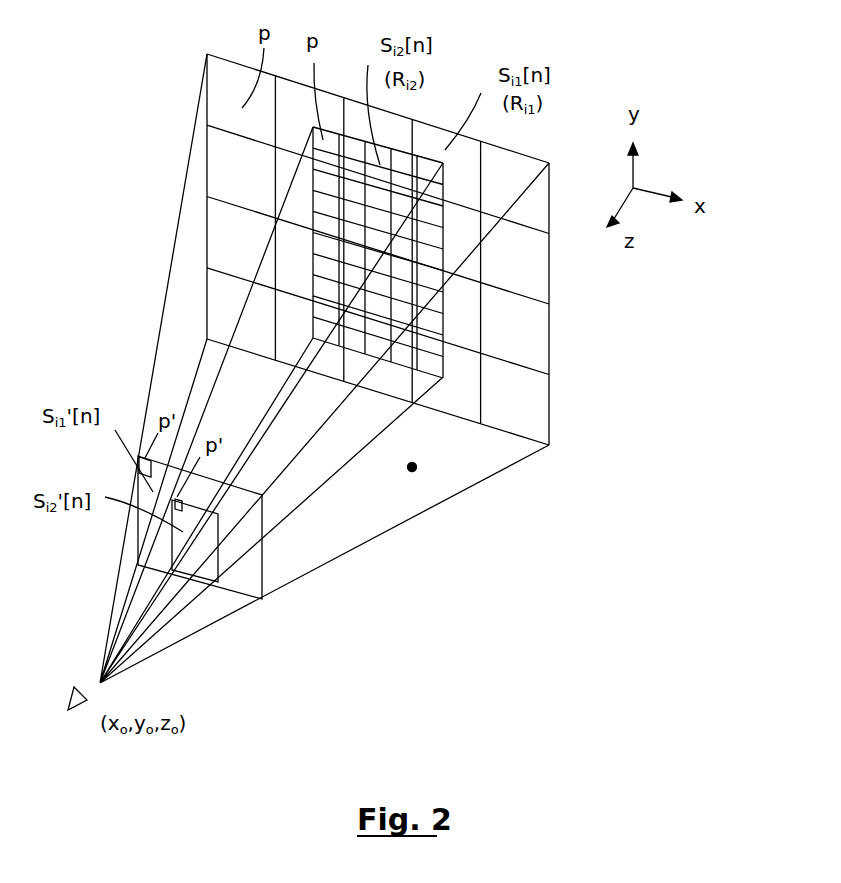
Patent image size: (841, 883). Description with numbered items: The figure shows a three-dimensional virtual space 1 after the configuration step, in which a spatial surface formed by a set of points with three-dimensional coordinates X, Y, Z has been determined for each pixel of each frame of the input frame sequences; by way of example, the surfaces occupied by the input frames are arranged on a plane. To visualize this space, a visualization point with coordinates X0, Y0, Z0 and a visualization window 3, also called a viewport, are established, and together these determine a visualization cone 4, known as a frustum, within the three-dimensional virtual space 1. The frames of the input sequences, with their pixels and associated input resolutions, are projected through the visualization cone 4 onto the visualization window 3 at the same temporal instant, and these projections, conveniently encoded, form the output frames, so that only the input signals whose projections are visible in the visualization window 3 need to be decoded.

The three-dimensional virtual space 1 is at (121, 227).
The visualization window 3 is at (262, 600).
The visualization cone 4 is at (415, 470).